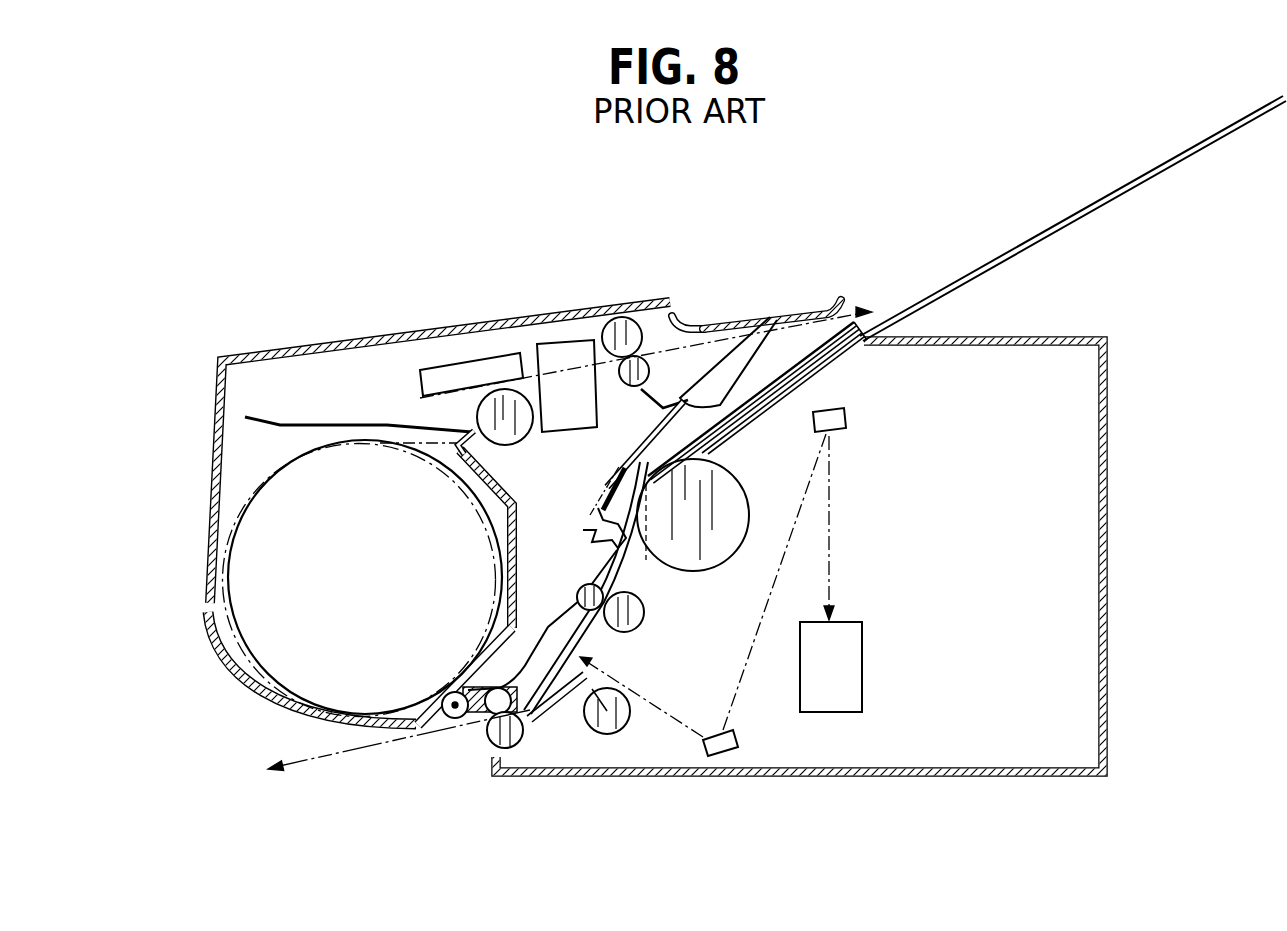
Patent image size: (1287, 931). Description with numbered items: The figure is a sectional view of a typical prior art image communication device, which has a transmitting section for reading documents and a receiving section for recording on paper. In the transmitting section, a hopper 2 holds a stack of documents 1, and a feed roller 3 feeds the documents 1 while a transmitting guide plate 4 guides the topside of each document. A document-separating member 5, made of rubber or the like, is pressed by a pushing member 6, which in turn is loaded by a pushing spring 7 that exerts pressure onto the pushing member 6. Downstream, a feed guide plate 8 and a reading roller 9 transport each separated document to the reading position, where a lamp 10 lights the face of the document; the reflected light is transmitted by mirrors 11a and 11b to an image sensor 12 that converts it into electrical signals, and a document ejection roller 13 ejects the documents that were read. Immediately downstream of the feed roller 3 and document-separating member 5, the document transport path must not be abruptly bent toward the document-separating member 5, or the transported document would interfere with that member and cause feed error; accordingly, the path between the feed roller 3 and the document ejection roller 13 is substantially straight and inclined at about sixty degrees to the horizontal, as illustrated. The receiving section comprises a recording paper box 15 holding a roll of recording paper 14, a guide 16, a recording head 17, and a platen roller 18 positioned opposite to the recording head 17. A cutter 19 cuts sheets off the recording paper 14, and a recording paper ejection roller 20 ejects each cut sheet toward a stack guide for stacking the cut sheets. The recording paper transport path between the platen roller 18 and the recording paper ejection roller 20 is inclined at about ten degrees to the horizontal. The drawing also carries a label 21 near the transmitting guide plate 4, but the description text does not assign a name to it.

The documents 1 is at (870, 323).
The hopper 2 is at (1120, 188).
The feed roller 3 is at (737, 478).
The transmitting guide plate 4 is at (752, 328).
The document-separating member 5 is at (688, 400).
The pushing member 6 is at (588, 540).
The pushing spring 7 is at (610, 494).
The feed guide plate 8 is at (647, 568).
The reading roller 9 is at (577, 596).
The lamp 10 is at (632, 718).
The mirror 11a is at (745, 742).
The mirror 11b is at (858, 417).
The image sensor 12 is at (863, 665).
The document ejection roller 13 is at (500, 688).
The recording paper 14 is at (275, 480).
The recording paper box 15 is at (258, 688).
The guide 16 is at (348, 424).
The recording head 17 is at (477, 370).
The platen roller 18 is at (512, 442).
The cutter 19 is at (572, 342).
The recording paper ejection roller 20 is at (631, 316).
The guide hook 21 is at (710, 318).